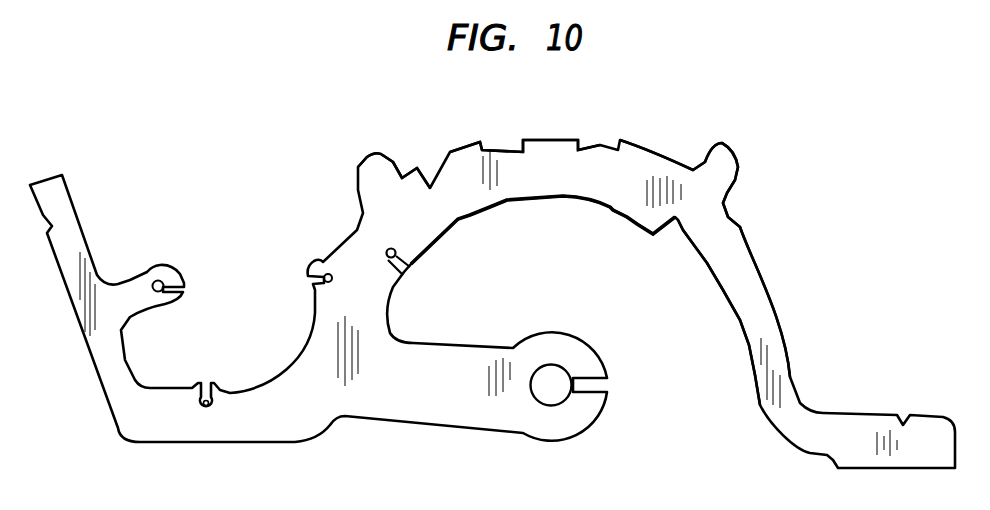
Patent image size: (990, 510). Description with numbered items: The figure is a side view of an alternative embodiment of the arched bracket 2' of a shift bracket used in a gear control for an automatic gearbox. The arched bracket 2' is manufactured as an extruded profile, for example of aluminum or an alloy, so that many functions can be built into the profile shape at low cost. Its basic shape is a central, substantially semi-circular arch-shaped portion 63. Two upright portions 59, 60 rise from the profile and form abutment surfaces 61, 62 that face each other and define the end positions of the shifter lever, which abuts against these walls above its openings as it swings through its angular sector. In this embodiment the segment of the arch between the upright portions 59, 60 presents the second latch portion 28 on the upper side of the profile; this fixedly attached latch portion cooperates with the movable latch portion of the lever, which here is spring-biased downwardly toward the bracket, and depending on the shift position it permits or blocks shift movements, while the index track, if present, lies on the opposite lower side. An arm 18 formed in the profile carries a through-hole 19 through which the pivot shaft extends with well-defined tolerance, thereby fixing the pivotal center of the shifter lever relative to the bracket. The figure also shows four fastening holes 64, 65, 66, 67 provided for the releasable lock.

The arm 18 is at (455, 408).
The through-hole 19 is at (552, 365).
The second latch portion 28 is at (527, 137).
The upright portion 59 is at (367, 168).
The abutment surface 61 is at (393, 162).
The abutment surface 62 is at (700, 152).
The upright portion 60 is at (722, 160).
The arched bracket 2' is at (763, 284).
The arch-shaped portion 63 is at (763, 318).
The fastening hole 64 is at (160, 282).
The fastening hole 65 is at (205, 385).
The fastening hole 66 is at (315, 265).
The fastening hole 67 is at (387, 251).